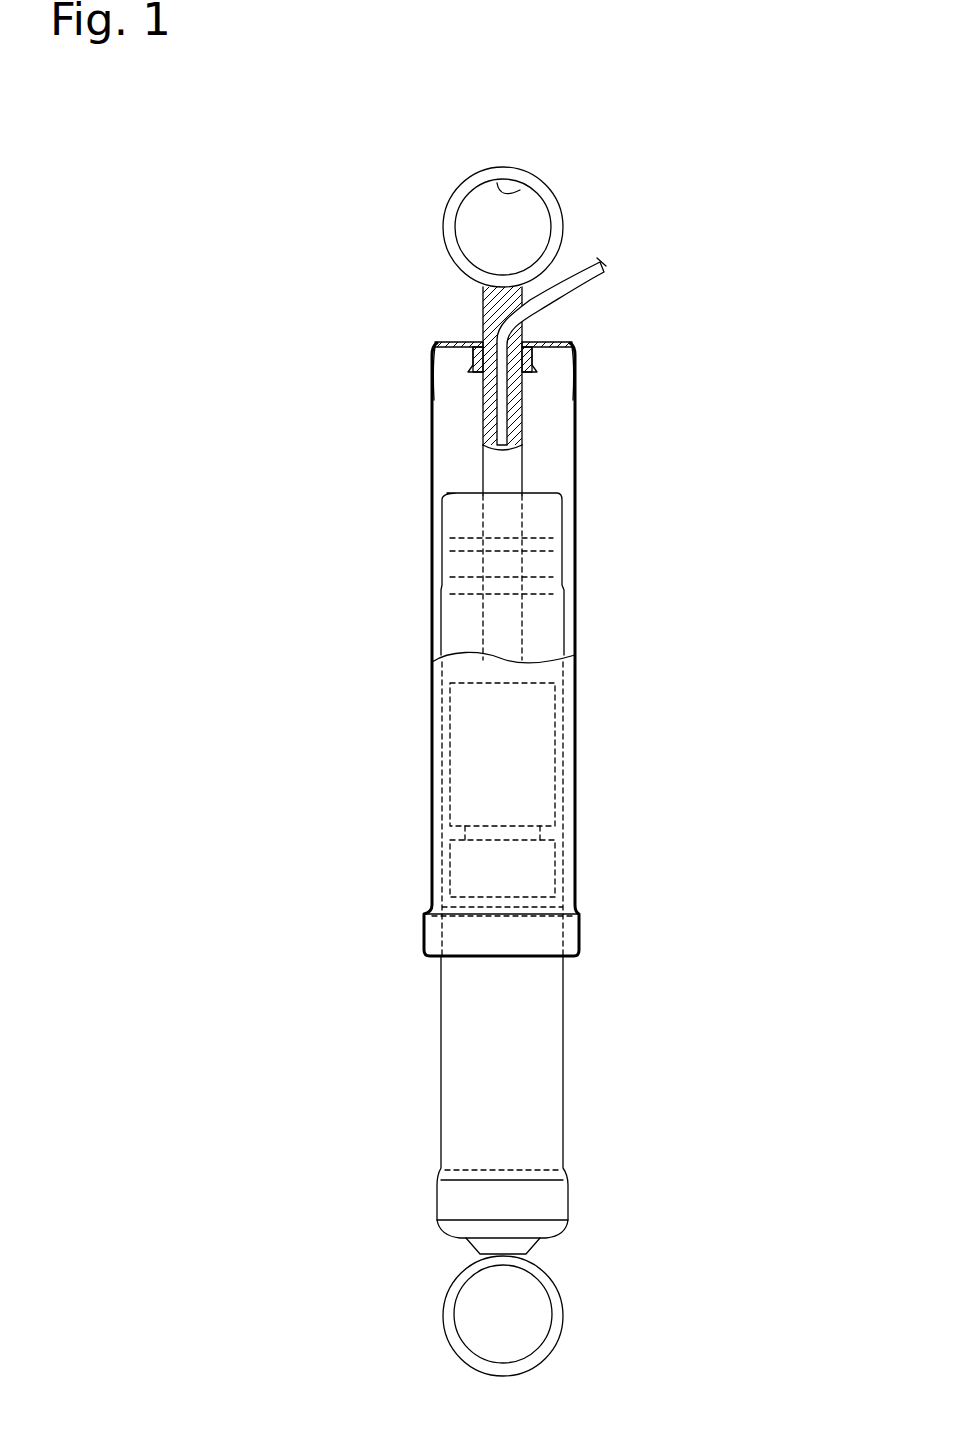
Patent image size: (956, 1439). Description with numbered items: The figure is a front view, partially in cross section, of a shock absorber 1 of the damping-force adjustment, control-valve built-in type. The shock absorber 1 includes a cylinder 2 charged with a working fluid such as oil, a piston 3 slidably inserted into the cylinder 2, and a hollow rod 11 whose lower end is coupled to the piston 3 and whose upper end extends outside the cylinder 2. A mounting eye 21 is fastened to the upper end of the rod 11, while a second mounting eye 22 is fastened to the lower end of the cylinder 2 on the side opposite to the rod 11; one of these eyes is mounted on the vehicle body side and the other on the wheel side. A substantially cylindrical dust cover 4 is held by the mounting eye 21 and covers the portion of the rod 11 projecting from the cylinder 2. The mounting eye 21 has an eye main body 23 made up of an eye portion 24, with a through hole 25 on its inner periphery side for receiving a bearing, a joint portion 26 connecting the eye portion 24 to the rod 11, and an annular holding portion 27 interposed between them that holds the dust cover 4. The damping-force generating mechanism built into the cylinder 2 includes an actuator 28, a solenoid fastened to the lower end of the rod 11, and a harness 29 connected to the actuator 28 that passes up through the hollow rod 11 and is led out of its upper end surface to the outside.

The shock absorber 1 is at (753, 115).
The cylinder 2 is at (563, 1068).
The piston 3 is at (554, 862).
The dust cover 4 is at (416, 744).
The hollow rod 11 is at (467, 458).
The mounting eye 21 is at (590, 185).
The mounting eye 22 is at (423, 1322).
The eye main body 23 is at (423, 228).
The eye portion 24 is at (468, 175).
The through hole 25 is at (520, 190).
The joint portion 26 is at (497, 298).
The holding portion 27 is at (530, 336).
The actuator 28 is at (553, 750).
The harness 29 is at (602, 260).